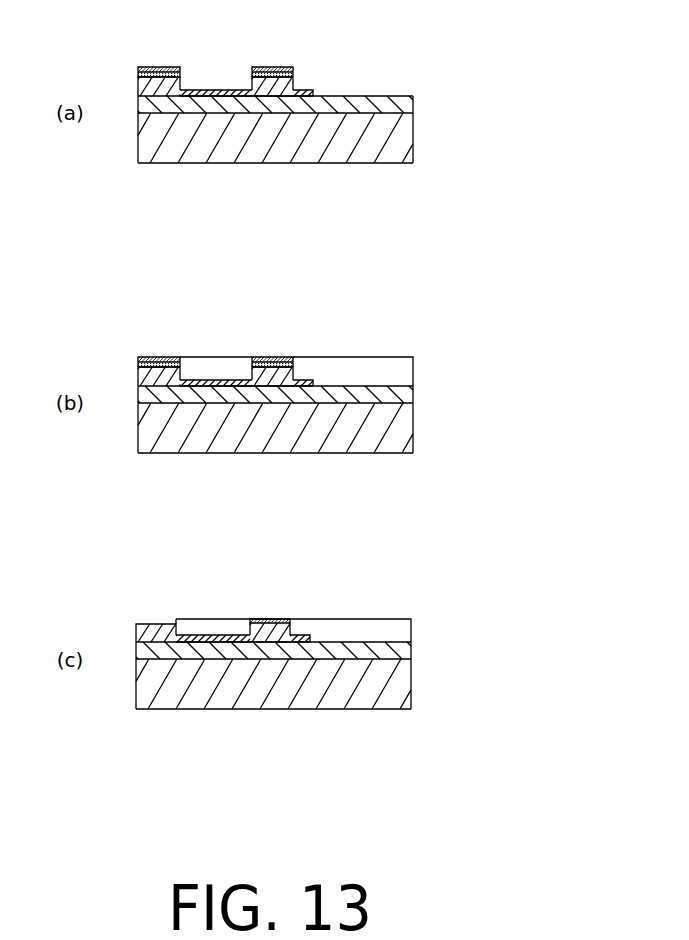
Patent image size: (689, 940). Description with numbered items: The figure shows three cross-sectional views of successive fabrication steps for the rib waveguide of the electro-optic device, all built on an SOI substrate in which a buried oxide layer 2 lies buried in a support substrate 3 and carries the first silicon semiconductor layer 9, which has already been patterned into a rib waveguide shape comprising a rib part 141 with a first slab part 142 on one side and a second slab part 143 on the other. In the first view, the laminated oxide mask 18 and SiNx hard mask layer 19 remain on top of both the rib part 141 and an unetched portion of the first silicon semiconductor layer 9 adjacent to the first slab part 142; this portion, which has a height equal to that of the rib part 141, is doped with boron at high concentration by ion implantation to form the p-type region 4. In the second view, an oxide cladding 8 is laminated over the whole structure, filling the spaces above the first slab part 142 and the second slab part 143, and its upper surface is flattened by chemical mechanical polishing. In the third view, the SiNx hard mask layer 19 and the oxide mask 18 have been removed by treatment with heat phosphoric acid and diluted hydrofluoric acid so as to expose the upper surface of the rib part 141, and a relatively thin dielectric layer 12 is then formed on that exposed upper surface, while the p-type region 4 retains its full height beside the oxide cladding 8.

The buried oxide layer 2 is at (403, 651).
The support substrate 3 is at (277, 693).
The p-type region 4 is at (148, 635).
The oxide cladding 8 is at (380, 630).
The first silicon semiconductor layer 9 is at (224, 635).
The dielectric layer 12 is at (278, 619).
The oxide mask 18 is at (280, 361).
The SiNx hard mask layer 19 is at (260, 358).
The rib part 141 is at (265, 643).
The first slab part 142 is at (205, 643).
The second slab part 143 is at (308, 643).